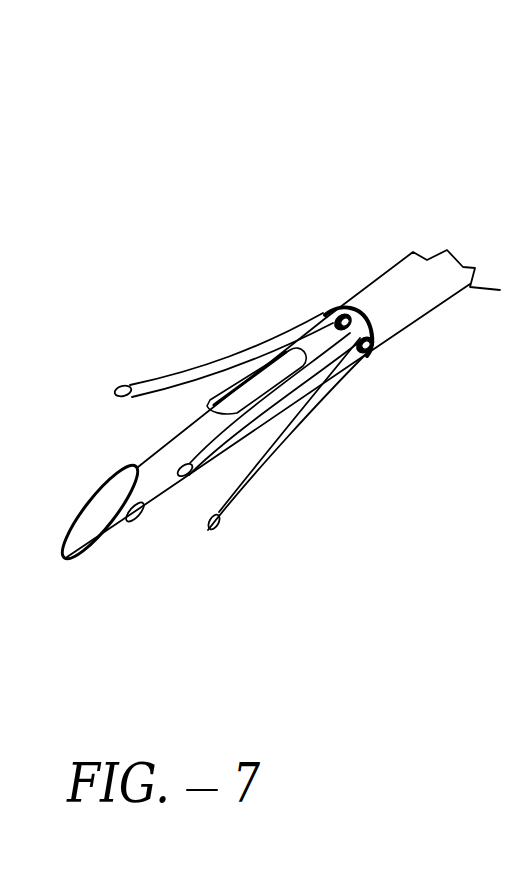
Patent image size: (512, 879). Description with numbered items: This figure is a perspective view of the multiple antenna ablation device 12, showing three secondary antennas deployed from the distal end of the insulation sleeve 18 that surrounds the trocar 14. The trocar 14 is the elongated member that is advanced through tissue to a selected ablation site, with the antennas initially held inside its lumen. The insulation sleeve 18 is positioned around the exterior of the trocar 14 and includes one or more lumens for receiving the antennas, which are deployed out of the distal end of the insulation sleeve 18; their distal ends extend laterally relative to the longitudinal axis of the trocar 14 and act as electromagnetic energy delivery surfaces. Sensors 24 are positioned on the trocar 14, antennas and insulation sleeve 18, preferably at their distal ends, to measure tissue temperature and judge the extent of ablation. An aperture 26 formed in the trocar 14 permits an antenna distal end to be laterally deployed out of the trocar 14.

The multiple antenna ablation device 12 is at (311, 203).
The trocar 14 is at (162, 492).
The insulation sleeve 18 is at (413, 252).
The sensors 24 is at (342, 308).
The aperture 26 is at (241, 411).